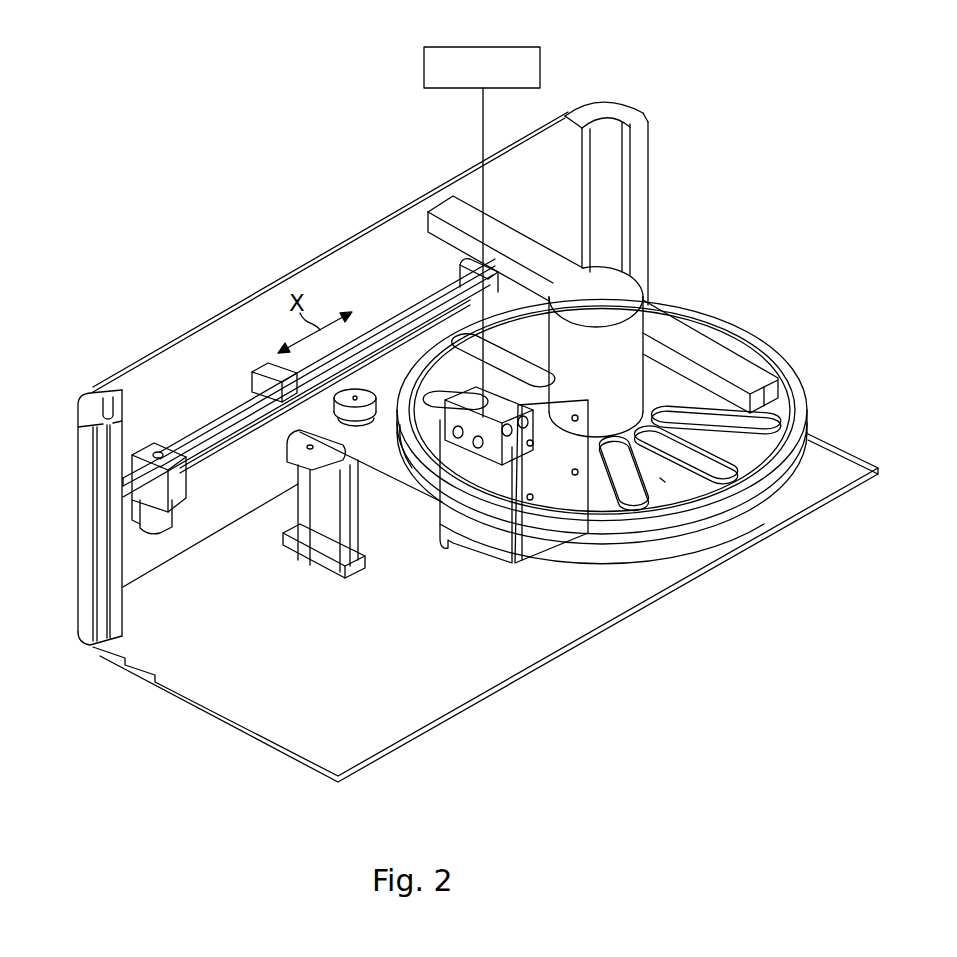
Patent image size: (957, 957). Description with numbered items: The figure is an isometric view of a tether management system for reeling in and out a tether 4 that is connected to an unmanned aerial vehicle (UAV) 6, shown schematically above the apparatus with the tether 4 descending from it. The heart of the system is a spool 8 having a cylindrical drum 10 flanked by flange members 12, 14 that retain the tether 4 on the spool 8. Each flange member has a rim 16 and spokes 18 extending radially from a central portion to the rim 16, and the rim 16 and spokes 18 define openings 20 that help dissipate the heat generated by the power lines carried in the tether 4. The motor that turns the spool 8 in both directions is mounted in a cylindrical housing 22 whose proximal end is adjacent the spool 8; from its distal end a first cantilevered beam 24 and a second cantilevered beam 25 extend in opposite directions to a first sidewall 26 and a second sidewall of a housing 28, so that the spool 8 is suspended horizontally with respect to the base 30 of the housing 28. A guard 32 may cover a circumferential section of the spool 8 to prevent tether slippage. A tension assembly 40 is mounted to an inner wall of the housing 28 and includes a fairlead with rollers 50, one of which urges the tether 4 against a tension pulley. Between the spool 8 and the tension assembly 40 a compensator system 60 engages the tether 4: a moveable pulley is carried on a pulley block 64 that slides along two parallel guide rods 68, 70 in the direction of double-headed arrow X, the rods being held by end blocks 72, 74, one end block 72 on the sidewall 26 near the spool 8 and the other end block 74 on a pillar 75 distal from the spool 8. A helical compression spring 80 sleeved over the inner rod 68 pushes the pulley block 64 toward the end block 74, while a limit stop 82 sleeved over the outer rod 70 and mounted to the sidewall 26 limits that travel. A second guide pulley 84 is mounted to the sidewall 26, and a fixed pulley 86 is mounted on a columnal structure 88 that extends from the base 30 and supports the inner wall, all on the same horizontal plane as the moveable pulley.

The tether 4 is at (481, 118).
The unmanned aerial vehicle (UAV) 6 is at (424, 63).
The spool 8 is at (632, 394).
The cylindrical drum 10 is at (613, 453).
The flange member 12 is at (405, 460).
The flange member 14 is at (425, 496).
The rim 16 is at (405, 427).
The spokes 18 is at (660, 480).
The openings 20 is at (716, 417).
The cylindrical housing 22 is at (610, 363).
The first cantilevered beam 24 is at (505, 232).
The second cantilevered beam 25 is at (757, 367).
The first sidewall 26 is at (362, 243).
The housing 28 is at (627, 103).
The base 30 is at (517, 663).
The guard 32 is at (584, 543).
The tension assembly 40 is at (478, 504).
The rollers 50 is at (527, 428).
The compensator system 60 is at (204, 338).
The pulley block 64 is at (170, 452).
The guide rod 68 is at (150, 515).
The guide rod 70 is at (130, 483).
The end block 72 is at (458, 272).
The end block 74 is at (123, 510).
The pillar 75 is at (82, 395).
The helical compression spring 80 is at (343, 370).
The limit stop 82 is at (269, 371).
The second guide pulley 84 is at (356, 394).
The fixed pulley 86 is at (318, 474).
The columnal structure 88 is at (322, 540).